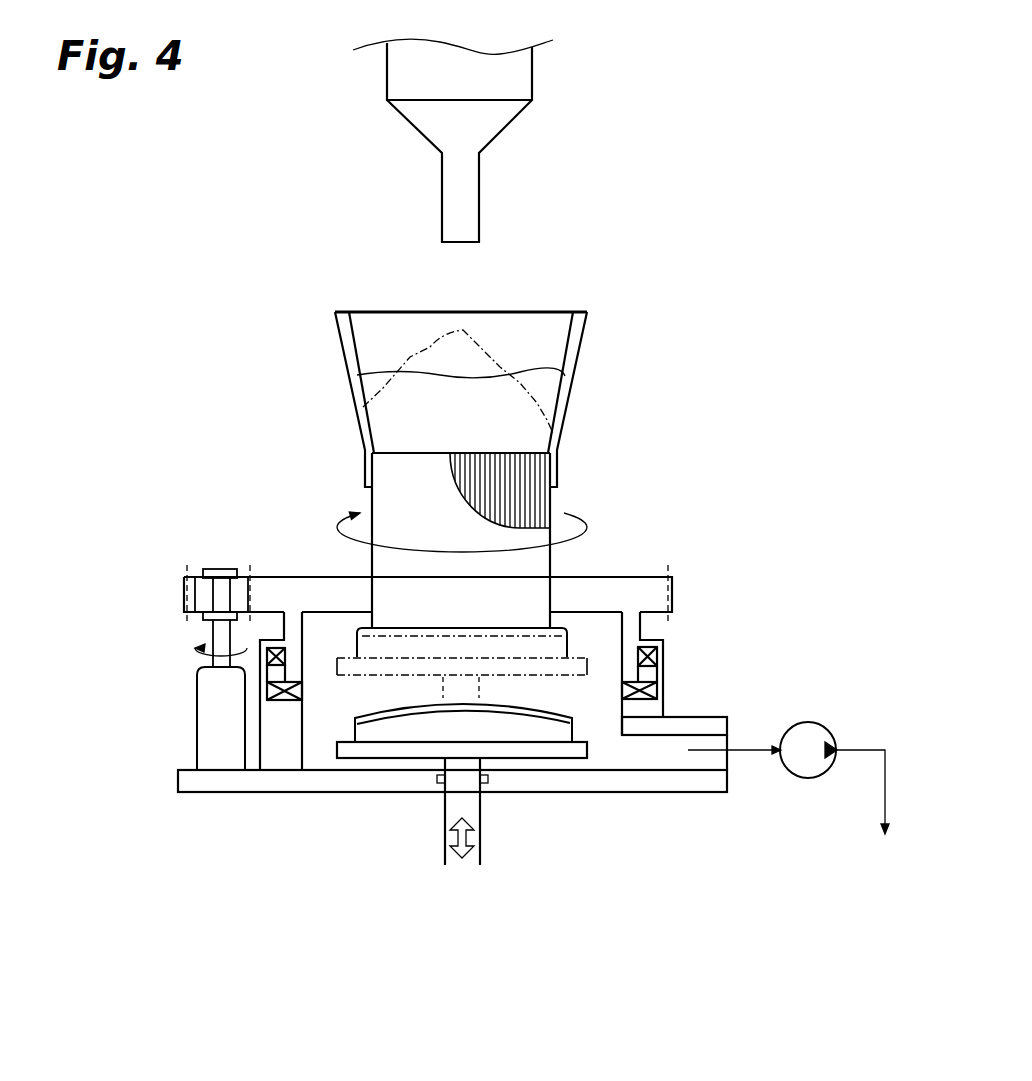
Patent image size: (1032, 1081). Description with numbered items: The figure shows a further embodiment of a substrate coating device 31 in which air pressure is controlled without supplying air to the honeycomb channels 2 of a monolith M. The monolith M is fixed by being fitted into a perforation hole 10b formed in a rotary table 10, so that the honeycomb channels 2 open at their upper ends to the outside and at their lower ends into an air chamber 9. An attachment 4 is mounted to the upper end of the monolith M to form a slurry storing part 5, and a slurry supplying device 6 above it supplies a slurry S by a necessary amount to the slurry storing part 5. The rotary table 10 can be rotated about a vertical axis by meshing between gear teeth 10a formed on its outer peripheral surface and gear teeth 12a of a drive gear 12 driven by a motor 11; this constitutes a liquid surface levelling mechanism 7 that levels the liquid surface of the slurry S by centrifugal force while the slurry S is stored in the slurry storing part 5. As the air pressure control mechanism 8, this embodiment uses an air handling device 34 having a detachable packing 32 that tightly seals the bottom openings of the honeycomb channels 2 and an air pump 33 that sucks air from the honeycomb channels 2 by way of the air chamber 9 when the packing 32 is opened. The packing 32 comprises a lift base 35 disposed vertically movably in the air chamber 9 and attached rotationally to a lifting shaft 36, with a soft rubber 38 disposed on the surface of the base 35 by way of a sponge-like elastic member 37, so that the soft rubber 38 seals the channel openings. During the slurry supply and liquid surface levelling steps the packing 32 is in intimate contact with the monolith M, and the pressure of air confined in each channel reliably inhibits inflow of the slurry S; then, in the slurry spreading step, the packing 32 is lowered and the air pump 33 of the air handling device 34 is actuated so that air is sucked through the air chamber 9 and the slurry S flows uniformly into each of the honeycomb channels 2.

The honeycomb channels 2 is at (528, 495).
The attachment 4 is at (580, 348).
The slurry storing part 5 is at (392, 335).
The slurry supplying device 6 is at (512, 77).
The liquid surface levelling mechanism 7 is at (134, 419).
The air pressure control mechanism 8 is at (563, 901).
The air chamber 9 is at (322, 697).
The rotary table 10 is at (600, 588).
The gear teeth 10a is at (678, 593).
The perforation hole 10b is at (550, 592).
The motor 11 is at (208, 737).
The drive gear 12 is at (242, 573).
The gear teeth 12a is at (185, 597).
The substrate coating device 31 is at (783, 291).
The packing 32 is at (531, 764).
The air pump 33 is at (810, 746).
The air handling device 34 is at (786, 800).
The lift base 35 is at (423, 758).
The lifting shaft 36 is at (466, 800).
The sponge-like elastic member 37 is at (400, 730).
The soft rubber 38 is at (373, 709).
The monolith M is at (407, 498).
The slurry S is at (470, 403).